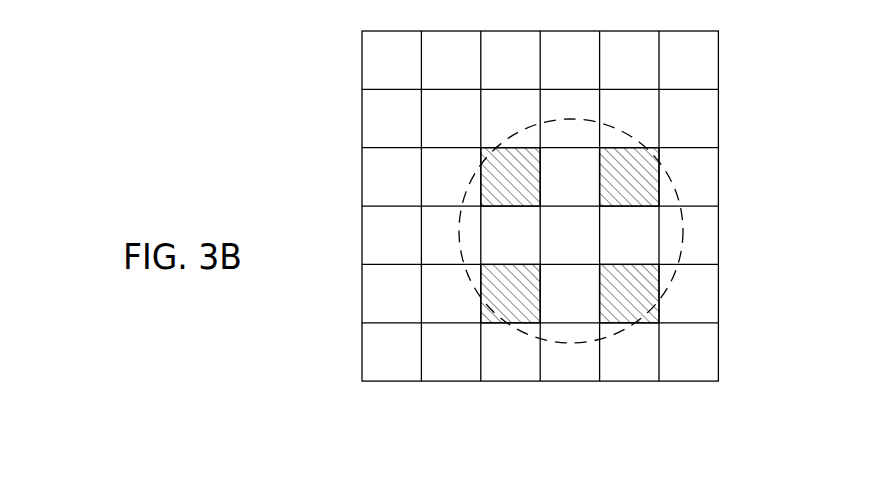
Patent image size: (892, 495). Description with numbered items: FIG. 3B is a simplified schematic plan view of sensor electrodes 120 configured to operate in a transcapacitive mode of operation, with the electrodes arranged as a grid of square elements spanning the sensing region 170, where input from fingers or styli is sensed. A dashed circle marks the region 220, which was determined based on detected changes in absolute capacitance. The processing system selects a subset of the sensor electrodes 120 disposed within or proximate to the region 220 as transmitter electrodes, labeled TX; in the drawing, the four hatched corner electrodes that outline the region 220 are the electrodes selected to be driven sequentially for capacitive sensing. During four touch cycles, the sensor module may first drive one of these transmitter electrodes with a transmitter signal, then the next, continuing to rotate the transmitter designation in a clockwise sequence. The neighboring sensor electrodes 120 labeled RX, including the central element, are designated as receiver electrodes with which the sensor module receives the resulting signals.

The sensor electrodes 120 is at (481, 193).
The sensing region 170 is at (717, 397).
The region 220 is at (632, 142).